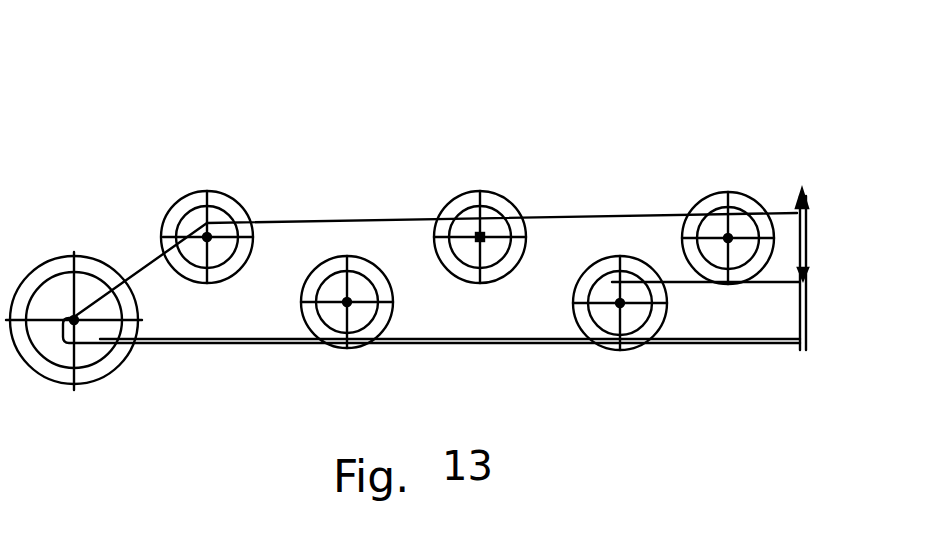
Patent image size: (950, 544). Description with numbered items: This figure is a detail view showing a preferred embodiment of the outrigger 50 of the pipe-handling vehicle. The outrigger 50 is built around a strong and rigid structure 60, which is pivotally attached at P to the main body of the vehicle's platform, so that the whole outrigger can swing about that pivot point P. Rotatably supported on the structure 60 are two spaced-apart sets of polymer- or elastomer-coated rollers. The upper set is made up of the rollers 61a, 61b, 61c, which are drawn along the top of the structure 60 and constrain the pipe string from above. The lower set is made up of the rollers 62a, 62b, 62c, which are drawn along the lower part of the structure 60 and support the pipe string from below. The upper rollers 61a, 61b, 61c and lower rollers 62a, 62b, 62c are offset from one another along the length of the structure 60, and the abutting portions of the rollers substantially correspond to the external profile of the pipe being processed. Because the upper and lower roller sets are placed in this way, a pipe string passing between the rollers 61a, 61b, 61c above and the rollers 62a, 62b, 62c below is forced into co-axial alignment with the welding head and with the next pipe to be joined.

The outrigger 50 is at (405, 113).
The structure 60 is at (575, 238).
The upper set roller 61a is at (220, 193).
The upper set roller 61b is at (468, 192).
The upper set roller 61c is at (745, 203).
The lower set roller 62a is at (87, 382).
The lower set roller 62b is at (360, 345).
The lower set roller 62c is at (592, 333).
The pivot point P is at (802, 194).